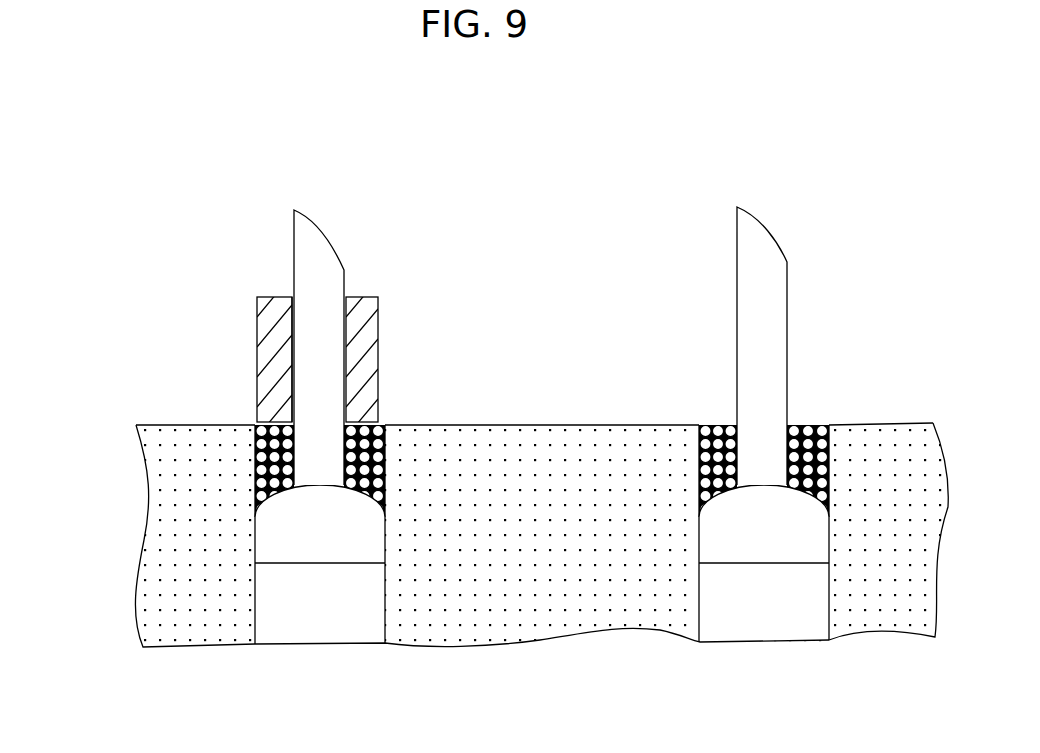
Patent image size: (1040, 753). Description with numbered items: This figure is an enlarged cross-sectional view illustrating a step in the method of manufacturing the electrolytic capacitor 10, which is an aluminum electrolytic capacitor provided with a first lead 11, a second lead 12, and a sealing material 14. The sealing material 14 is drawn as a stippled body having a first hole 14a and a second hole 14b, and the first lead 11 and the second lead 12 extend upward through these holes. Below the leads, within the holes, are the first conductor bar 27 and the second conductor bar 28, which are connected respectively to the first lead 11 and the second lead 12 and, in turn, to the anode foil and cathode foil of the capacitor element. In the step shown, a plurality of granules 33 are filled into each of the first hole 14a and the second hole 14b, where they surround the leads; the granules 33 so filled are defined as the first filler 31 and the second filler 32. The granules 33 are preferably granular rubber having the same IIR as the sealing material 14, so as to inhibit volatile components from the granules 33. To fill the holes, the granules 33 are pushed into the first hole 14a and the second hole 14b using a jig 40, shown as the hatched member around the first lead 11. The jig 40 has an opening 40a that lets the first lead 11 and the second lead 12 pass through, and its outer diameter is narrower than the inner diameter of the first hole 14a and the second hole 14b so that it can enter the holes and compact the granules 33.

The electrolytic capacitor 10 is at (106, 185).
The first lead 11 is at (322, 232).
The second lead 12 is at (773, 232).
The sealing material 14 is at (165, 533).
The first hole 14a is at (255, 465).
The second hole 14b is at (829, 465).
The first conductor bar 27 is at (320, 625).
The second conductor bar 28 is at (762, 625).
The first filler 31 is at (333, 326).
The second filler 32 is at (694, 326).
The granules 33 is at (383, 430).
The jig 40 is at (257, 308).
The opening 40a is at (293, 367).